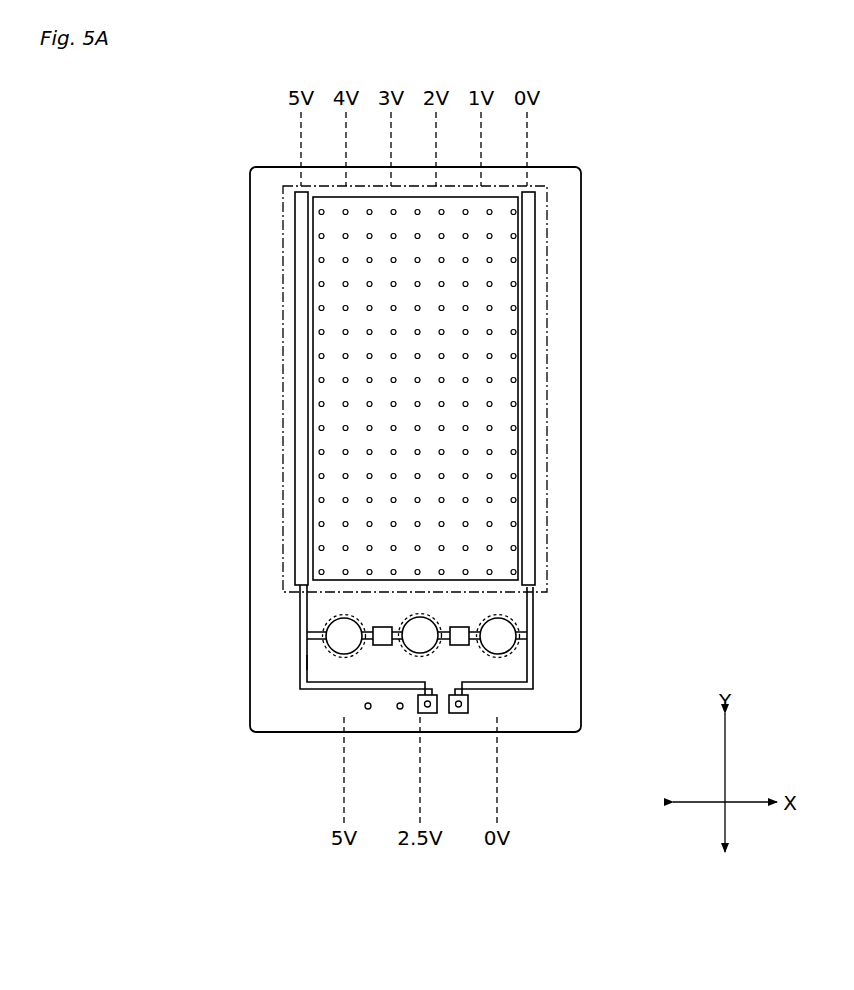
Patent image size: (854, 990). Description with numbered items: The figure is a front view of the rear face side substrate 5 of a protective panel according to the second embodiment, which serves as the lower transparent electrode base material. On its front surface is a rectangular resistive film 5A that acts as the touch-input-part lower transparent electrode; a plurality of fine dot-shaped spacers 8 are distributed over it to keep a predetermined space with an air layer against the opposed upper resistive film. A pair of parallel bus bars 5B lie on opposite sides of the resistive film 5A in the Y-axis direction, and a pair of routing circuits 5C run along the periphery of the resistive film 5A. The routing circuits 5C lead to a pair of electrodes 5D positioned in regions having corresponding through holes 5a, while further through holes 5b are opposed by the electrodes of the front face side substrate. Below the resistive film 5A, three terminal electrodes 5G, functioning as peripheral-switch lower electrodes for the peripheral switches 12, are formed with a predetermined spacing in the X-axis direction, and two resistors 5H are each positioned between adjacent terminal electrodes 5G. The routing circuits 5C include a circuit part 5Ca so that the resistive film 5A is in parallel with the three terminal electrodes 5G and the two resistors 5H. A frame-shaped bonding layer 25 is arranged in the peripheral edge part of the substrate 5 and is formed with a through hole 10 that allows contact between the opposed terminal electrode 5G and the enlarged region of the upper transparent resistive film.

The rear face side substrate 5 is at (624, 177).
The frame-shaped bonding layer 25 is at (528, 230).
The dot-shaped spacers 8 is at (490, 258).
The resistive film 5A is at (500, 416).
The bus bars 5B is at (303, 380).
The routing circuits 5C is at (402, 662).
The circuit part 5Ca is at (305, 660).
The terminal electrodes 5G is at (405, 637).
The peripheral switch 12 is at (328, 630).
The resistors 5H is at (383, 627).
The through hole 10 is at (405, 663).
The electrodes 5D is at (489, 752).
The through holes 5a is at (468, 705).
The through holes 5b is at (400, 709).